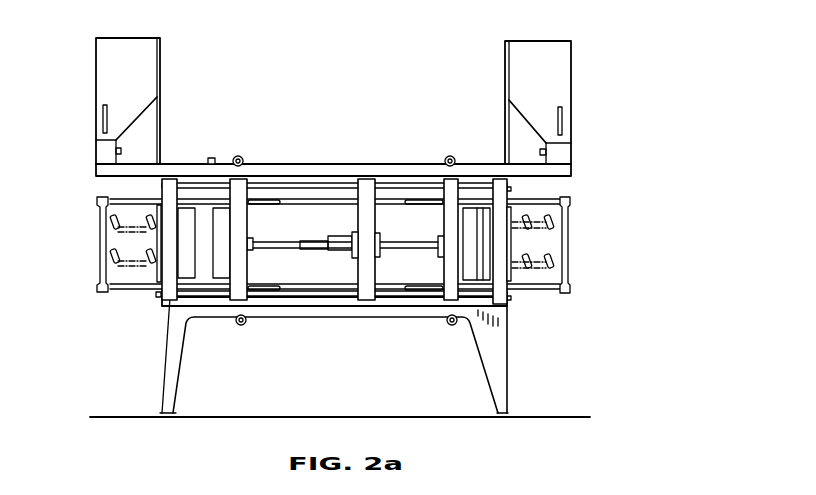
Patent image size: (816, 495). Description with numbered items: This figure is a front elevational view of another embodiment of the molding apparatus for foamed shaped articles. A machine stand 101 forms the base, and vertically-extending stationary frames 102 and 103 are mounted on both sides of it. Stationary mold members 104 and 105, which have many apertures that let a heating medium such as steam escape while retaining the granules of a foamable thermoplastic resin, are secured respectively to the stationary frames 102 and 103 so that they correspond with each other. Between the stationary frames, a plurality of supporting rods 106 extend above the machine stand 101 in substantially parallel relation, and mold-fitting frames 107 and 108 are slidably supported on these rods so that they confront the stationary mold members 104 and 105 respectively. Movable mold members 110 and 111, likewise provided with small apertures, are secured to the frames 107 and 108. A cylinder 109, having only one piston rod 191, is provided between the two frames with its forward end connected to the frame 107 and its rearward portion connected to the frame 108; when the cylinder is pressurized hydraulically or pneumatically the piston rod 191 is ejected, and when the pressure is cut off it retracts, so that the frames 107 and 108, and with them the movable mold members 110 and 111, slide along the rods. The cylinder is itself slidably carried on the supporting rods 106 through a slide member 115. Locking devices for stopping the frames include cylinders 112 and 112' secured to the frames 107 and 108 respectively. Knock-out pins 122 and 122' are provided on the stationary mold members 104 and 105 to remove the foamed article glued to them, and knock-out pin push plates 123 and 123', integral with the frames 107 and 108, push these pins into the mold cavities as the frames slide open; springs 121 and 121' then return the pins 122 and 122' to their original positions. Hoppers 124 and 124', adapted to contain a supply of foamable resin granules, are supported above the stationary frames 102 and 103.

The machine stand 101 is at (305, 313).
The stationary frame 102 is at (170, 300).
The stationary frame 103 is at (510, 305).
The stationary mold member 104 is at (186, 272).
The stationary mold member 105 is at (484, 275).
The supporting rod 106 is at (317, 186).
The mold-fitting frame 107 is at (242, 188).
The mold-fitting frame 108 is at (450, 302).
The cylinder 109 is at (412, 242).
The movable mold member 110 is at (220, 270).
The movable mold member 111 is at (467, 273).
The cylinder 112 is at (240, 235).
The cylinder 112' is at (441, 248).
The slide member 115 is at (360, 211).
The spring 121 is at (129, 263).
The spring 121' is at (561, 244).
The knock-out pin 122 is at (103, 240).
The knock-out pin 122' is at (563, 218).
The knock-out pin push plate 123 is at (79, 244).
The knock-out pin push plate 123' is at (588, 252).
The hopper 124 is at (131, 82).
The hopper 124' is at (521, 82).
The piston rod 191 is at (293, 248).